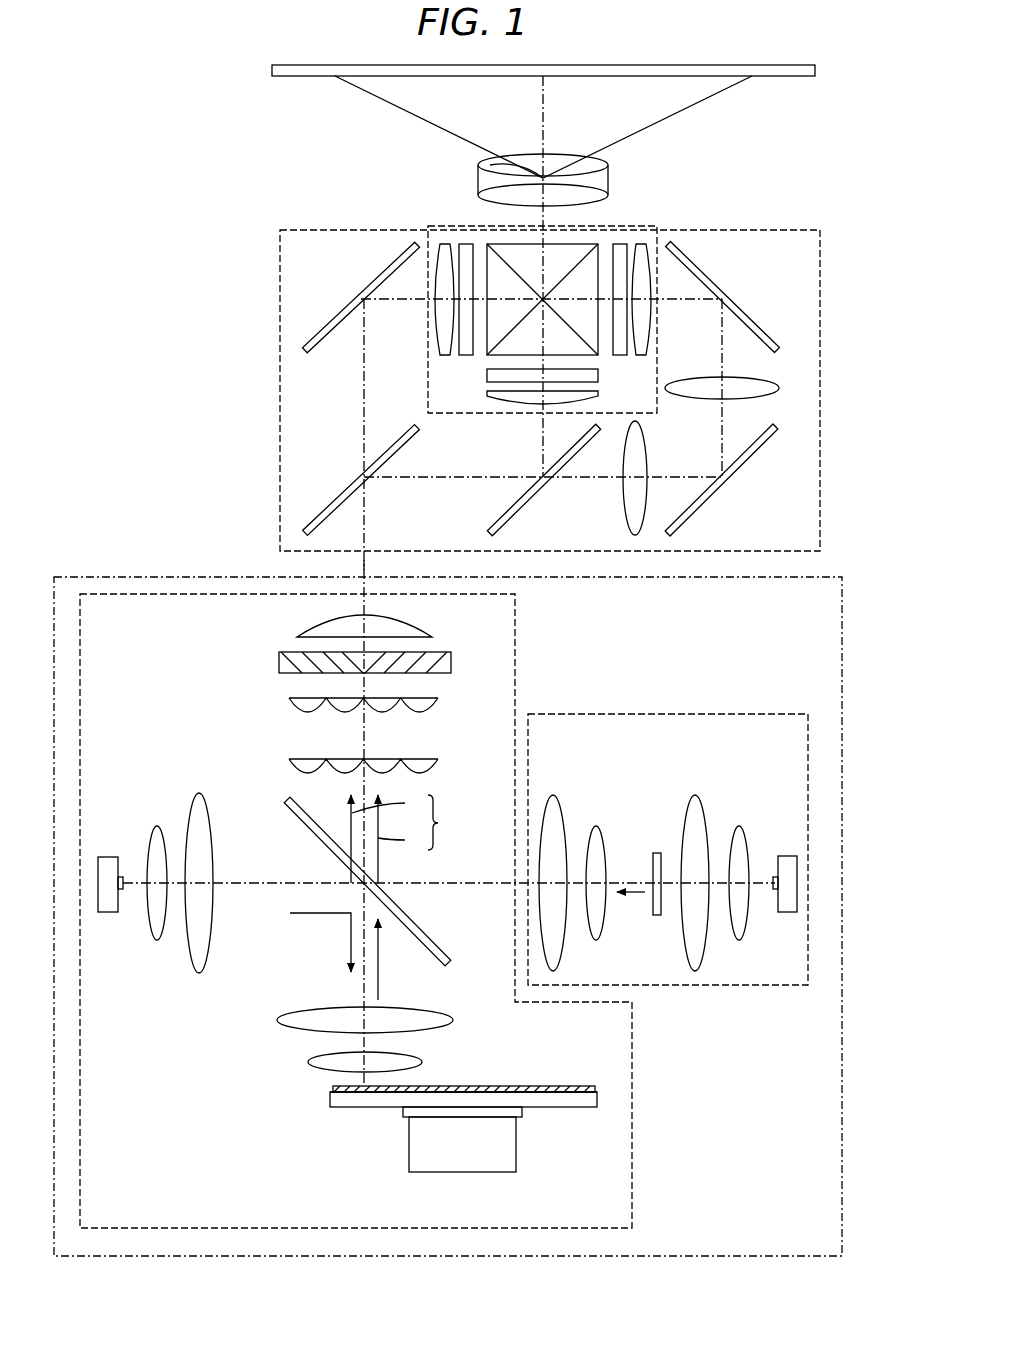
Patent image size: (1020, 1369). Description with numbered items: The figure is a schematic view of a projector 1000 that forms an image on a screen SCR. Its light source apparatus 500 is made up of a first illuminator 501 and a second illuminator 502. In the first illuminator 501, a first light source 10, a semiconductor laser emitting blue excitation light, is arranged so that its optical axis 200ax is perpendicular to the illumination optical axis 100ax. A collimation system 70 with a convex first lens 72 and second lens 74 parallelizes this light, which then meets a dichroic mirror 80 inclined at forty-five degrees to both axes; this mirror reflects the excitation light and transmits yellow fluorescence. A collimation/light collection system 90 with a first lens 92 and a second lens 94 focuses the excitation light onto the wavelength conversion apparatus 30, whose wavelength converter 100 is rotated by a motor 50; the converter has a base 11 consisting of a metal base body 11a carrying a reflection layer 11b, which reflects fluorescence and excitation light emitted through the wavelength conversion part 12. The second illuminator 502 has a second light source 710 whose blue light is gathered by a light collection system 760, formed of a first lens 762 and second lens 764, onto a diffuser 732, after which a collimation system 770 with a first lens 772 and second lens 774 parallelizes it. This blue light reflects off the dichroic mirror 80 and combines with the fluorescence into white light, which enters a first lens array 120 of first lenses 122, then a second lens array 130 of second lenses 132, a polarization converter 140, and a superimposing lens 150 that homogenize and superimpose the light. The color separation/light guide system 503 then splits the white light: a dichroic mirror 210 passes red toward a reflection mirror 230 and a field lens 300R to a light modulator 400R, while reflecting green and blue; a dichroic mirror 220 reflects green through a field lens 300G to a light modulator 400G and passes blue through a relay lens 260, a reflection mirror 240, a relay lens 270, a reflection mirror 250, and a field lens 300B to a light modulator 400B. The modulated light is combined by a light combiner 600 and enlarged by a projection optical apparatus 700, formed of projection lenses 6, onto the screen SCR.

The projector 1000 is at (200, 175).
The screen SCR is at (790, 78).
The projection optical apparatus 700 is at (478, 182).
The projection lens 6 is at (528, 163).
The color separation/light guide system 503 is at (820, 300).
The light combiner 600 is at (595, 244).
The field lens 300R is at (445, 244).
The light modulator 400R is at (465, 244).
The light modulator 400B is at (622, 244).
The field lens 300B is at (645, 244).
The reflection mirror 230 is at (308, 345).
The reflection mirror 250 is at (773, 345).
The light modulator 400G is at (487, 375).
The field lens 300G is at (487, 398).
The relay lens 270 is at (745, 378).
The dichroic mirror 210 is at (330, 505).
The dichroic mirror 220 is at (522, 505).
The relay lens 260 is at (623, 490).
The reflection mirror 240 is at (740, 470).
The light source apparatus 500 is at (792, 1256).
The first illuminator 501 is at (632, 1152).
The second illuminator 502 is at (770, 985).
The illumination optical axis 100ax is at (364, 565).
The superimposing lens 150 is at (427, 625).
The polarization converter 140 is at (440, 652).
The second lens array 130 is at (438, 705).
The second lens 132 is at (290, 705).
The first lens array 120 is at (438, 765).
The first lens 122 is at (290, 765).
The collimation system 70 is at (212, 738).
The first lens 72 is at (157, 827).
The second lens 74 is at (199, 793).
The first light source 10 is at (128, 850).
The optical axis 200ax is at (262, 890).
The dichroic mirror 80 is at (437, 943).
The collimation system 770 is at (632, 757).
The second lens 774 is at (560, 800).
The first lens 772 is at (598, 828).
The diffuser 732 is at (656, 852).
The light collection system 760 is at (776, 757).
The second lens 764 is at (700, 798).
The first lens 762 is at (742, 828).
The second light source 710 is at (763, 858).
The collimation/light collection system 90 is at (220, 1038).
The second lens 94 is at (282, 1030).
The first lens 92 is at (310, 1068).
The wavelength conversion apparatus 30 is at (385, 1130).
The wavelength converter 100 is at (530, 1082).
The base 11 is at (692, 1072).
The wavelength conversion part 12 is at (595, 1087).
The reflection layer 11b is at (597, 1091).
The base body 11a is at (597, 1098).
The motor 50 is at (518, 1150).